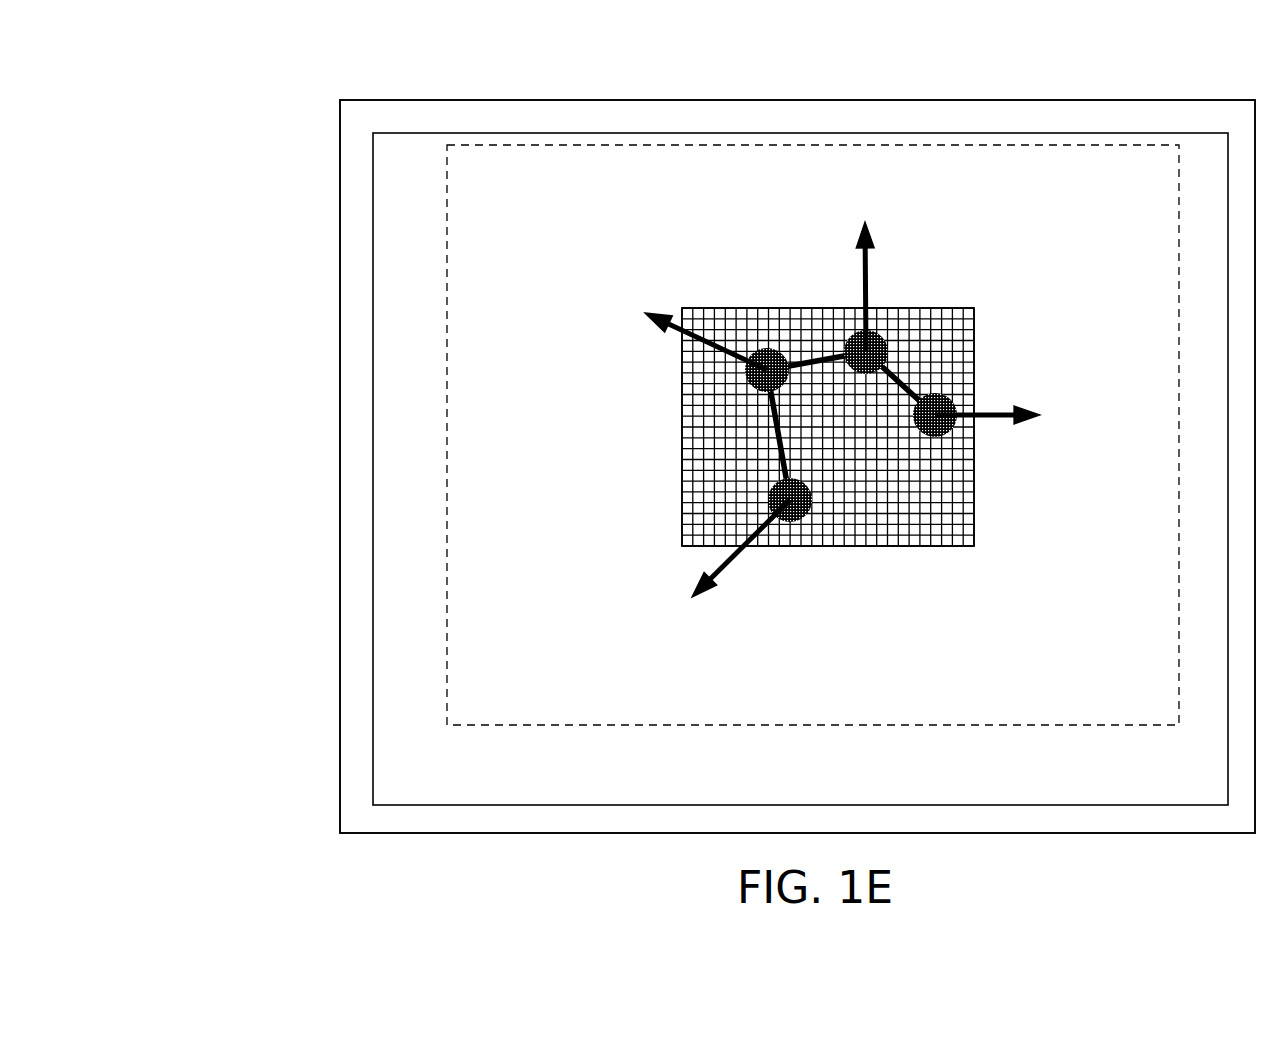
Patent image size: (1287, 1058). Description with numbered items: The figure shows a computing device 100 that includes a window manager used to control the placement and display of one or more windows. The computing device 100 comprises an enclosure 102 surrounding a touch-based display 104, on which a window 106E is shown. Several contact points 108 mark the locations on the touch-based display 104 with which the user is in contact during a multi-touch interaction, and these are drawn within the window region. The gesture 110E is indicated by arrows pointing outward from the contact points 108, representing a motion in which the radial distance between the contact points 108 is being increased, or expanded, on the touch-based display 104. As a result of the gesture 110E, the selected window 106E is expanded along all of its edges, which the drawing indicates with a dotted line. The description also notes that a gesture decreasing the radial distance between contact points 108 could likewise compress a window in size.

The electronic device 100 is at (802, 70).
The housing 102 is at (348, 159).
The display 104 is at (373, 330).
The touch-sensitive input region 106E is at (1072, 727).
The contact points 108 is at (872, 338).
The movement directions 110E is at (663, 316).